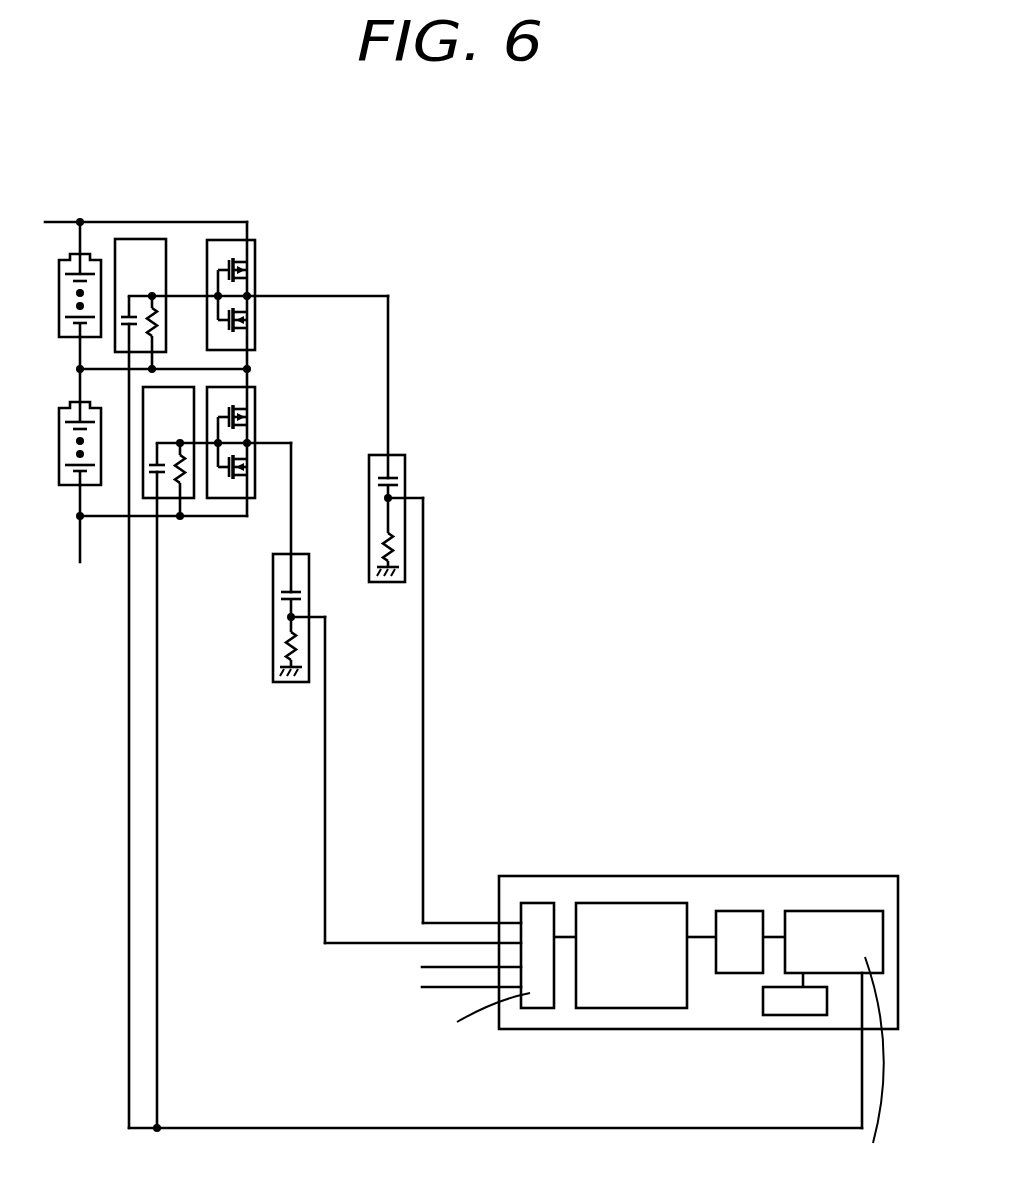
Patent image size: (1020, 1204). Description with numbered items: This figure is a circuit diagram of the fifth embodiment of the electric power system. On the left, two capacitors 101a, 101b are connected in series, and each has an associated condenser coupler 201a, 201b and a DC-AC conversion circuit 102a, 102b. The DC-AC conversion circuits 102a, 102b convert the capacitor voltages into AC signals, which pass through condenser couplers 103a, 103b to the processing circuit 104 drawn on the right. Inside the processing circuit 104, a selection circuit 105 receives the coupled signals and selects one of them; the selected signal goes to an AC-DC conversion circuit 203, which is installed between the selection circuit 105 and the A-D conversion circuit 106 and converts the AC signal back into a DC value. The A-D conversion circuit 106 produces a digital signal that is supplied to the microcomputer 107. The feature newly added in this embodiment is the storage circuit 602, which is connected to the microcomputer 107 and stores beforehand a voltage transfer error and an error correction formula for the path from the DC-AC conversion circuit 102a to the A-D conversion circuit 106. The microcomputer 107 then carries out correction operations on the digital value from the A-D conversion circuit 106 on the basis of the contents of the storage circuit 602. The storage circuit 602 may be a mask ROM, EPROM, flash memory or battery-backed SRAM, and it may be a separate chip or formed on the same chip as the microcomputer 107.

The capacitor 101a is at (88, 257).
The capacitor 101b is at (60, 452).
The condenser coupler 201a is at (145, 239).
The condenser coupler 201b is at (183, 498).
The DC-AC conversion circuit 102a is at (258, 256).
The DC-AC conversion circuit 102b is at (258, 420).
The condenser coupler 103a is at (405, 476).
The condenser coupler 103b is at (273, 613).
The processing circuit 104 is at (512, 876).
The selection circuit 105 is at (540, 904).
The AC-DC conversion circuit 203 is at (637, 910).
The A-D conversion circuit 106 is at (742, 912).
The microcomputer 107 is at (838, 912).
The storage circuit 602 is at (776, 1015).